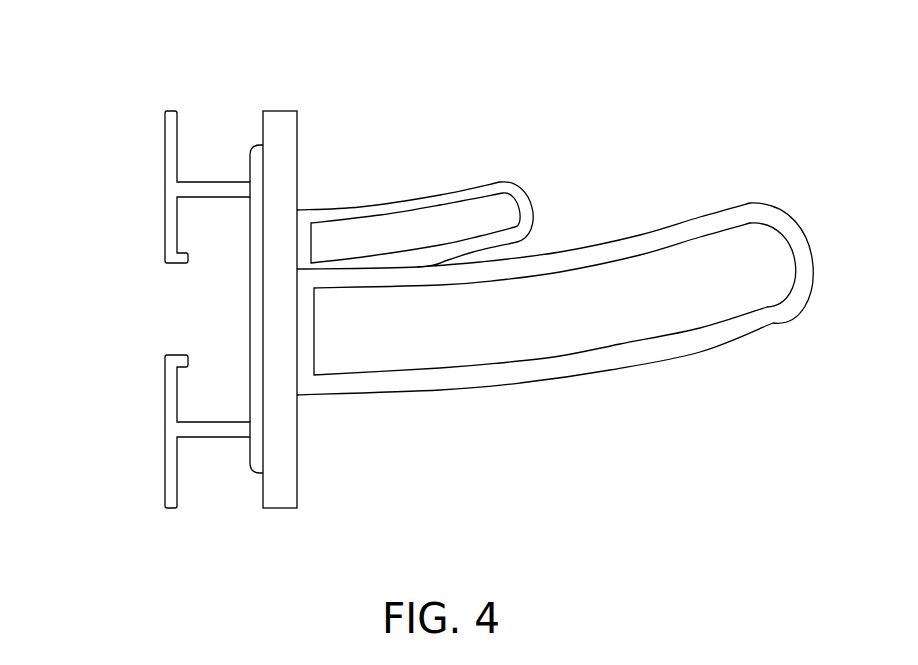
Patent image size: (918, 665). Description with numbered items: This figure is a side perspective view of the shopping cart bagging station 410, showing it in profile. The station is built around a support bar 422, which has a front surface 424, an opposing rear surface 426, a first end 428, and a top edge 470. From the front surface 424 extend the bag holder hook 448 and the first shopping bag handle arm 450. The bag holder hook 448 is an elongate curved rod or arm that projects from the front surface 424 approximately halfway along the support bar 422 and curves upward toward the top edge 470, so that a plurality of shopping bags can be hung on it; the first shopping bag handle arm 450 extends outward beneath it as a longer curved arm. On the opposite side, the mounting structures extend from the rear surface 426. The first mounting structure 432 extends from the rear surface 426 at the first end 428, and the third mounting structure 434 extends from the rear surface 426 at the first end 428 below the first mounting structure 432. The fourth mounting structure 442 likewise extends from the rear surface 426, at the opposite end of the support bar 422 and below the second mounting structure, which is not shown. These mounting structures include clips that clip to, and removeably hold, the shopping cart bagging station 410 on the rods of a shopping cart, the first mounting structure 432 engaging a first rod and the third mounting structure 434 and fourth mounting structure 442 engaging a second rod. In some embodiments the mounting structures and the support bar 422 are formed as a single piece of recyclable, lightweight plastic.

The shopping cart bagging station 410 is at (220, 100).
The top edge 470 is at (280, 111).
The first mounting structure 432 is at (168, 168).
The third mounting structure 434 is at (168, 479).
The rear surface 426 is at (158, 318).
The first end 428 is at (317, 533).
The front surface 424 is at (384, 432).
The support bar 422 is at (298, 463).
The bag holder hook 448 is at (531, 214).
The first shopping bag handle arm 450 is at (750, 260).
The fourth mounting structure 442 is at (679, 5).